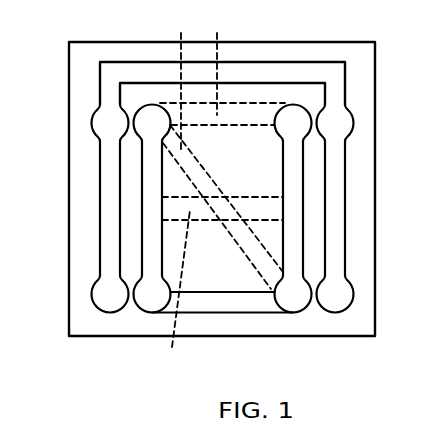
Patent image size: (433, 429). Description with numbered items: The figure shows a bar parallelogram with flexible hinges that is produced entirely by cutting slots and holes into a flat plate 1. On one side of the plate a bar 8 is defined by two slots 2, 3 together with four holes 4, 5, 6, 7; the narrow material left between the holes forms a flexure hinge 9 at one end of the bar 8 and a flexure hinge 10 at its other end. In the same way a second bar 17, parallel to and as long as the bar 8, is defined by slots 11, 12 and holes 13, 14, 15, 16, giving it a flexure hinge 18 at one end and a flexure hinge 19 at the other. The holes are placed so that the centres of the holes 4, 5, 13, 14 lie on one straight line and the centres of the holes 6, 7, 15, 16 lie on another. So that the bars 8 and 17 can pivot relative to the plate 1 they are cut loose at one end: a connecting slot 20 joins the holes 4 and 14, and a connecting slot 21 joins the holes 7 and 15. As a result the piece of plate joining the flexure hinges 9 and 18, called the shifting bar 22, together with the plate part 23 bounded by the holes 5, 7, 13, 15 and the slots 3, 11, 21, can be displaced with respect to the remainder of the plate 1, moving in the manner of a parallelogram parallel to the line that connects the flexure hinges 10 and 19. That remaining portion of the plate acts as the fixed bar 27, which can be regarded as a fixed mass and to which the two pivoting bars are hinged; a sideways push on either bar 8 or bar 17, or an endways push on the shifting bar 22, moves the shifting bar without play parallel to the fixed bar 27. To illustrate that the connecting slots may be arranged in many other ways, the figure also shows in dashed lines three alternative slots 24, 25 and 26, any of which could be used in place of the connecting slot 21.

The plate 1 is at (120, 344).
The slot 2 is at (103, 218).
The slot 3 is at (145, 192).
The hole 4 is at (102, 124).
The hole 5 is at (148, 118).
The hole 6 is at (103, 289).
The hole 7 is at (148, 300).
The bar 8 is at (128, 166).
The flexure hinge 9 is at (128, 118).
The flexure hinge 10 is at (128, 292).
The slot 11 is at (295, 160).
The slot 12 is at (335, 187).
The hole 13 is at (294, 118).
The hole 14 is at (338, 122).
The hole 15 is at (297, 298).
The hole 16 is at (335, 302).
The bar 17 is at (315, 235).
The flexure hinge 18 is at (318, 117).
The flexure hinge 19 is at (315, 292).
The connecting slot 20 is at (286, 71).
The connecting slot 21 is at (241, 303).
The shifting bar 22 is at (243, 85).
The plate part 23 is at (208, 275).
The alternative slot 24 is at (222, 68).
The alternative slot 25 is at (222, 82).
The alternative slot 26 is at (177, 292).
The fixed bar 27 is at (280, 322).